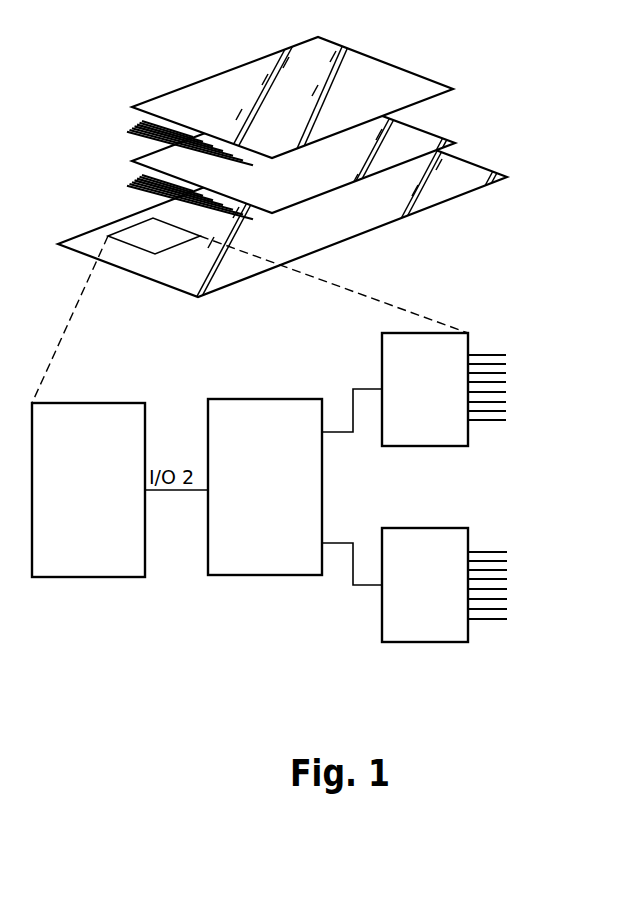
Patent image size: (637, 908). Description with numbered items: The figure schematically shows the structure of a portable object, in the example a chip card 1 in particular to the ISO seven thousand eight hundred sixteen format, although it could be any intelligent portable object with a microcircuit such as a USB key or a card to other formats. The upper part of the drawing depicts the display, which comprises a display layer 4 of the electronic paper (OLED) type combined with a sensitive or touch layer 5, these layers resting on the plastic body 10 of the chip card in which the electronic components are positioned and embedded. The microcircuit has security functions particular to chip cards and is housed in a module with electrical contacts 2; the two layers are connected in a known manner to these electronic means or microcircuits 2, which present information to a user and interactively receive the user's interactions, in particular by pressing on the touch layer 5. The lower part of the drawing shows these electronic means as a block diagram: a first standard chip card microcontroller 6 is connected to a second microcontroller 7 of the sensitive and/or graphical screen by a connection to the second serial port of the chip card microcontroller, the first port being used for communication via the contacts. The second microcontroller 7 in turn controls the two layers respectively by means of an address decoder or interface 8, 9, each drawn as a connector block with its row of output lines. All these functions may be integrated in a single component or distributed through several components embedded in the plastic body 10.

The chip card 1 is at (547, 98).
The module with electrical contacts 2 is at (566, 445).
The display layer 4 is at (422, 140).
The touch layer 5 is at (402, 80).
The first standard chip card microcontroller 6 is at (88, 562).
The second microcontroller 7 is at (253, 557).
The address decoder or interface 8 is at (422, 437).
The address decoder or interface 9 is at (438, 625).
The plastic body 10 is at (473, 173).